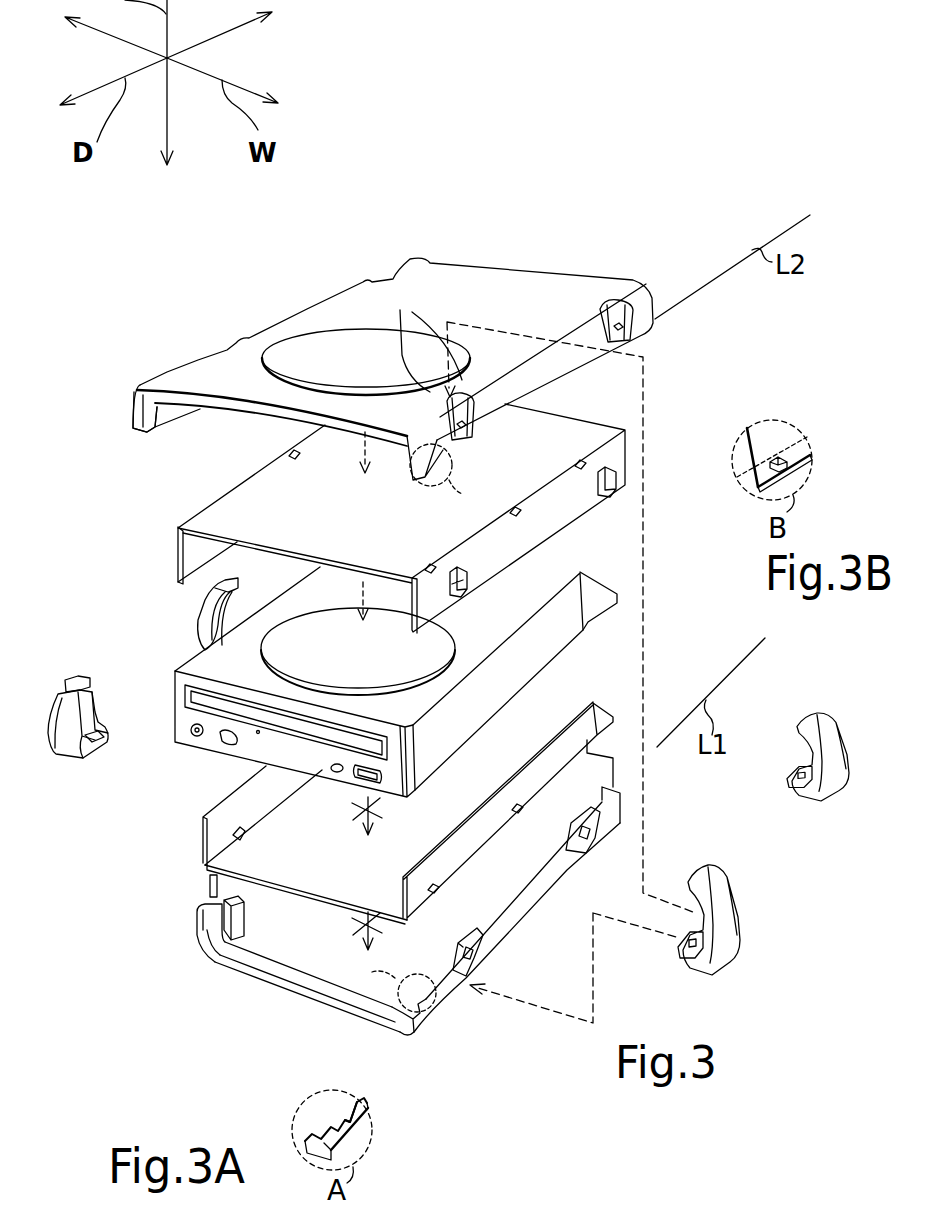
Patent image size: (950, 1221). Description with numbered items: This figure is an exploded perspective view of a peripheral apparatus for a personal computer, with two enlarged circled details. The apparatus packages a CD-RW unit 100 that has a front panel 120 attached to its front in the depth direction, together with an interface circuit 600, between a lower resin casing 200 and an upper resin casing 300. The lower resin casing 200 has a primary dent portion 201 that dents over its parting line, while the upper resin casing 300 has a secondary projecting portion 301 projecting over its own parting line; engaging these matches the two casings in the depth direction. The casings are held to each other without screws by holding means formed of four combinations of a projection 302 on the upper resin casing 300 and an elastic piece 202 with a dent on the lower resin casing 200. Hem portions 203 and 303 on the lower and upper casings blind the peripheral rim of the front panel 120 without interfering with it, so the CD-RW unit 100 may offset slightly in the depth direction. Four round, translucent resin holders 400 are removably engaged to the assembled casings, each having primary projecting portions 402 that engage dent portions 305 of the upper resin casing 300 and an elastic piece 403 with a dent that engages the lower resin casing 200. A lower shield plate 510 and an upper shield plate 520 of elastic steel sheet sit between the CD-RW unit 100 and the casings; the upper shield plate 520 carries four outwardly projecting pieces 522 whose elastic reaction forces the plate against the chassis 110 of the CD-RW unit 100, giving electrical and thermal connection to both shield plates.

In FIG. 3, the CD-RW unit 100 is at (309, 682).
In FIG. 3, the chassis 110 is at (255, 640).
In FIG. 3, the front panel 120 is at (187, 712).
In FIG. 3, the lower resin casing 200 is at (371, 904).
In FIG. 3A, the lower resin casing 200 is at (372, 1143).
In FIG. 3, the primary dent portion 201 is at (409, 1017).
In FIG. 3A, the primary dent portion 201 is at (340, 1108).
In FIG. 3, the elastic piece 202 is at (475, 963).
In FIG. 3, the hem portion 203 is at (200, 925).
In FIG. 3, the upper resin casing 300 is at (549, 287).
In FIG. 3B, the upper resin casing 300 is at (778, 436).
In FIG. 3B, the secondary projecting portion 301 is at (783, 466).
In FIG. 3, the projection 302 is at (482, 421).
In FIG. 3, the hem portion 303 is at (135, 418).
In FIG. 3, the dent portion 305 is at (420, 345).
In FIG. 3, the resin holder 400 is at (439, 757).
In FIG. 3, the primary projecting portion 402 is at (92, 692).
In FIG. 3, the elastic piece 403 is at (90, 760).
In FIG. 3, the lower shield plate 510 is at (240, 862).
In FIG. 3, the upper shield plate 520 is at (588, 432).
In FIG. 3, the projecting piece 522 is at (615, 488).
In FIG. 3, the interface circuit 600 is at (603, 597).